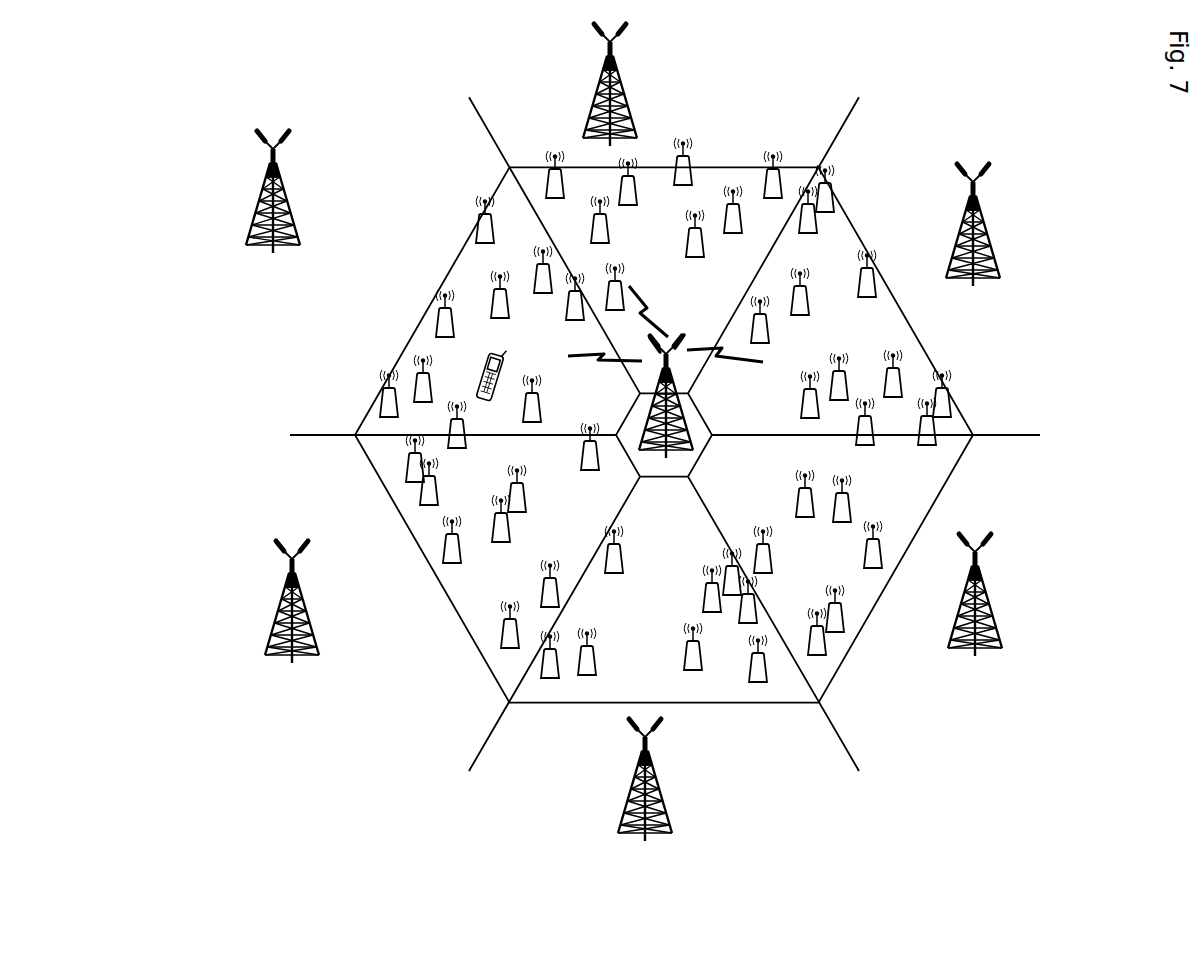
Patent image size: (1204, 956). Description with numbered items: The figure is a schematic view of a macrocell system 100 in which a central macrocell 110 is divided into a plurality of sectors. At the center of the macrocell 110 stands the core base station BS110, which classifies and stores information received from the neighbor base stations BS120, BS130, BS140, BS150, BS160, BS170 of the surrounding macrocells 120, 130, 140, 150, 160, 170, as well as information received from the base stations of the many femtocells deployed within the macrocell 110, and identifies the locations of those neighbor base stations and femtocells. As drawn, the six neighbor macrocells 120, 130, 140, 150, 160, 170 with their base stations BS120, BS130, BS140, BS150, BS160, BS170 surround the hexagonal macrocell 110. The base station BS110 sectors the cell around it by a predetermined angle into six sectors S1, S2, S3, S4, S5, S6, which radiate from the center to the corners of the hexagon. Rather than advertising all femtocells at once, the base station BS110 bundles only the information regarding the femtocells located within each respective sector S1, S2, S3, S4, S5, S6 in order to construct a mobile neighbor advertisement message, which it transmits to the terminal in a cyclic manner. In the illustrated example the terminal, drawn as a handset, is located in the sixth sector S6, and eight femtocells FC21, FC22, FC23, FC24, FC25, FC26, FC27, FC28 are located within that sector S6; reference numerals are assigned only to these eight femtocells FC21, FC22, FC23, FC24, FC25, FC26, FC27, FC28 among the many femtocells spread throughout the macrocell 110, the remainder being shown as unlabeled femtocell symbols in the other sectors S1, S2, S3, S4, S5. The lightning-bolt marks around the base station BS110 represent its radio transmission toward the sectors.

The macrocell system 100 is at (1060, 78).
The macrocell 110 is at (665, 434).
The macrocell 120 is at (650, 85).
The macrocell 130 is at (1043, 249).
The macrocell 140 is at (1004, 621).
The macrocell 150 is at (684, 780).
The macrocell 160 is at (273, 624).
The macrocell 170 is at (255, 212).
The core base station BS110 is at (687, 441).
The neighbor base station BS120 is at (597, 97).
The neighbor base station BS130 is at (984, 235).
The neighbor base station BS140 is at (986, 605).
The neighbor base station BS150 is at (623, 815).
The neighbor base station BS160 is at (281, 608).
The neighbor base station BS170 is at (263, 200).
The sector S1 is at (663, 222).
The sector S2 is at (751, 405).
The sector S3 is at (808, 540).
The sector S4 is at (663, 565).
The sector S5 is at (555, 467).
The sixth sector S6 is at (479, 335).
The femtocell FC21 is at (381, 403).
The femtocell FC22 is at (415, 378).
The femtocell FC23 is at (542, 405).
The femtocell FC24 is at (436, 320).
The femtocell FC25 is at (493, 297).
The femtocell FC26 is at (574, 317).
The femtocell FC27 is at (537, 272).
The femtocell FC28 is at (480, 218).